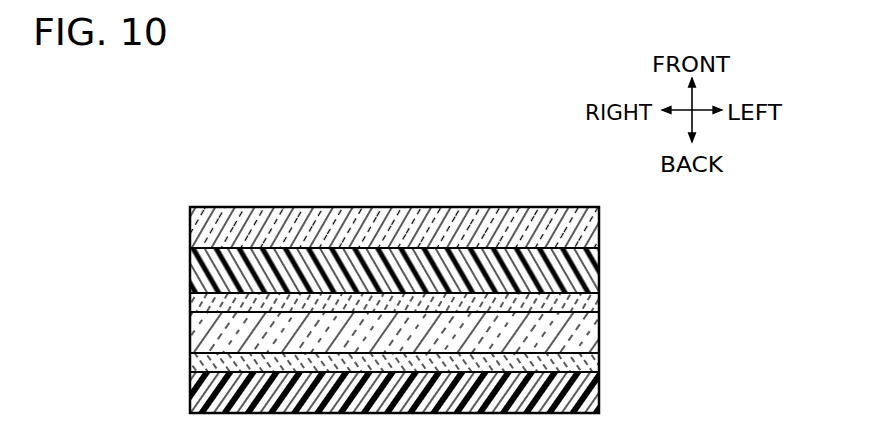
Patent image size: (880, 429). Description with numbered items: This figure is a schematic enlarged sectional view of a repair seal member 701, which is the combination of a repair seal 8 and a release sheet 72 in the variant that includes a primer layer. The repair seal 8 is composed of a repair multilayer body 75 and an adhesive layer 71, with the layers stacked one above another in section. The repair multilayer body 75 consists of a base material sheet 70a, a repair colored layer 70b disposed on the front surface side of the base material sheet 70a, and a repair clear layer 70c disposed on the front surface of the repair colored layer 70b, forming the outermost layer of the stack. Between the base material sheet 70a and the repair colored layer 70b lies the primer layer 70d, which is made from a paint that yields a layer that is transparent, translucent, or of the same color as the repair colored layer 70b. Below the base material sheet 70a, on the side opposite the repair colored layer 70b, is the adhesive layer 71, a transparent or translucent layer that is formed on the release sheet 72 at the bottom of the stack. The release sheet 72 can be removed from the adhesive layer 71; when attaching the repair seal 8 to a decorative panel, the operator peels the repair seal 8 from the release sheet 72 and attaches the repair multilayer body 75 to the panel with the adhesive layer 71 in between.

The repair seal member 701 is at (212, 189).
The repair seal 8 is at (740, 240).
The layer unit 75 is at (687, 212).
The repair clear layer 70c is at (577, 220).
The repair colored layer 70b is at (580, 262).
The primer layer 70d is at (577, 302).
The base material sheet 70a is at (578, 333).
The adhesive layer 71 is at (577, 359).
The release sheet 72 is at (212, 390).